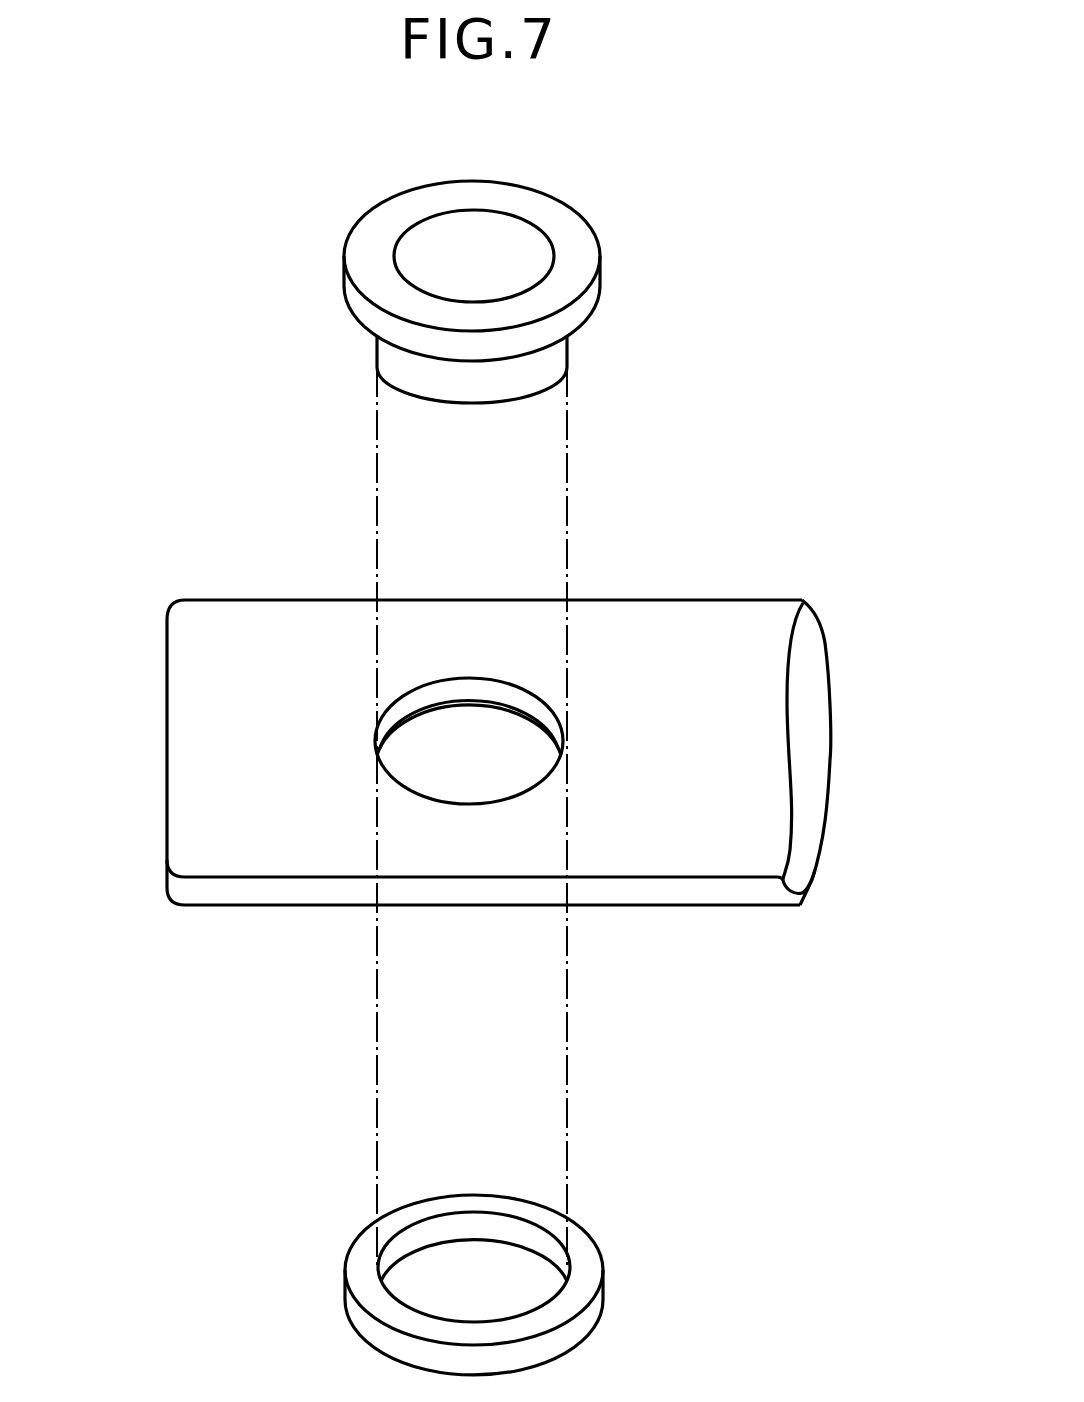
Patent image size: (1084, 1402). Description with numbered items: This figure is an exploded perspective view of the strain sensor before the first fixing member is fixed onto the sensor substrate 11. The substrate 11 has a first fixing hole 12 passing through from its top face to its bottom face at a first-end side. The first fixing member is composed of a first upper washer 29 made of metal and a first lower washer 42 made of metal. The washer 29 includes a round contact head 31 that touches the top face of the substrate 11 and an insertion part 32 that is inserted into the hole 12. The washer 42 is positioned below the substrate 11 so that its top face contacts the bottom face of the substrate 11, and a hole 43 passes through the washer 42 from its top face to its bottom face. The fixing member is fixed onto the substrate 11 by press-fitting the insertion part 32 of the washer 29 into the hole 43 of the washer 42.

The sensor substrate 11 is at (685, 658).
The first fixing hole 12 is at (462, 698).
The first upper washer 29 is at (580, 248).
The round contact head 31 is at (590, 305).
The insertion part 32 is at (443, 382).
The first lower washer 42 is at (590, 1288).
The hole 43 is at (510, 1280).